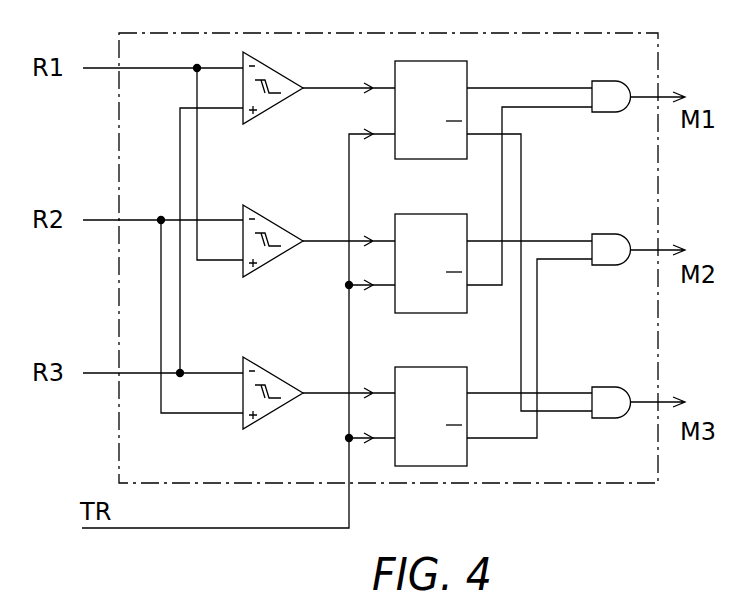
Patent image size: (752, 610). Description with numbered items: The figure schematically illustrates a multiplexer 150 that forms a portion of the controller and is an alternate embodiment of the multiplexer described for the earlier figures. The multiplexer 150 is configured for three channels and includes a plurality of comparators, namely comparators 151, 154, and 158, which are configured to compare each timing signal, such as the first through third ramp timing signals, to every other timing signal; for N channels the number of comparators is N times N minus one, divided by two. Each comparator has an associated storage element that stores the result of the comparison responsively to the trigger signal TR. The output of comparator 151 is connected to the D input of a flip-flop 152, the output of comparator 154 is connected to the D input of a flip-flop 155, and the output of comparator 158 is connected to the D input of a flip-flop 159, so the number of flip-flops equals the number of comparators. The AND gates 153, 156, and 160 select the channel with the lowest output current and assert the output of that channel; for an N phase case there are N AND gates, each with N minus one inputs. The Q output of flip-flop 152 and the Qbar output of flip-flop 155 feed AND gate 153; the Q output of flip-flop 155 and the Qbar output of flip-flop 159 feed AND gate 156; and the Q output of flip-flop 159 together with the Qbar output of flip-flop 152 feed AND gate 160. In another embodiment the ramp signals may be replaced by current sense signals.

The multiplexer 150 is at (653, 552).
The comparator 151 is at (290, 98).
The flip-flop 152 is at (467, 72).
The AND gate 153 is at (618, 113).
The comparator 154 is at (288, 250).
The flip-flop 155 is at (455, 213).
The AND gate 156 is at (615, 267).
The comparator 158 is at (290, 403).
The flip-flop 159 is at (457, 367).
The AND gate 160 is at (614, 418).